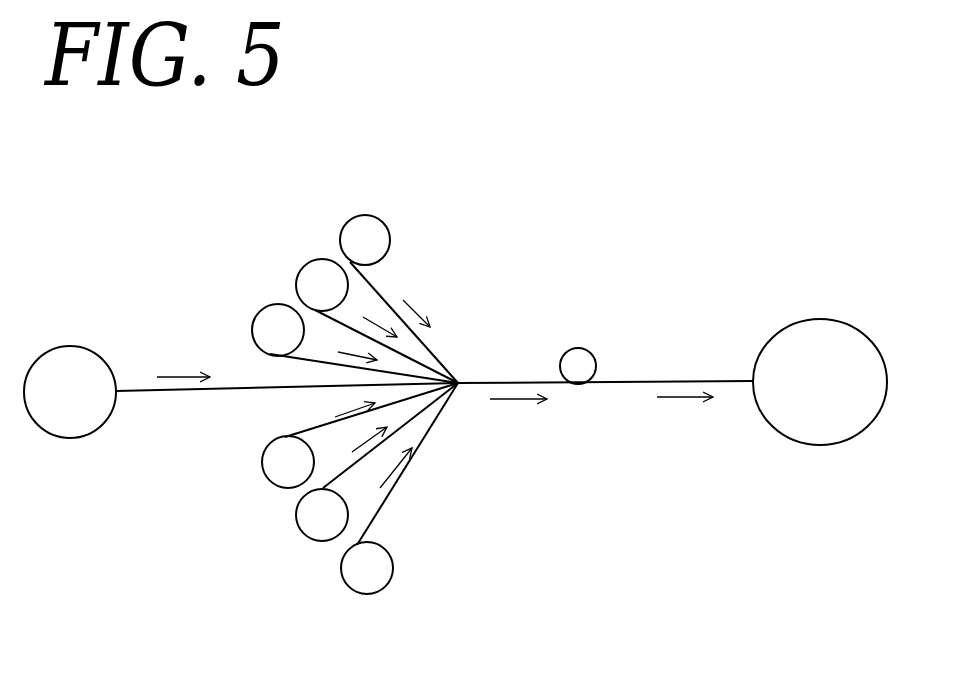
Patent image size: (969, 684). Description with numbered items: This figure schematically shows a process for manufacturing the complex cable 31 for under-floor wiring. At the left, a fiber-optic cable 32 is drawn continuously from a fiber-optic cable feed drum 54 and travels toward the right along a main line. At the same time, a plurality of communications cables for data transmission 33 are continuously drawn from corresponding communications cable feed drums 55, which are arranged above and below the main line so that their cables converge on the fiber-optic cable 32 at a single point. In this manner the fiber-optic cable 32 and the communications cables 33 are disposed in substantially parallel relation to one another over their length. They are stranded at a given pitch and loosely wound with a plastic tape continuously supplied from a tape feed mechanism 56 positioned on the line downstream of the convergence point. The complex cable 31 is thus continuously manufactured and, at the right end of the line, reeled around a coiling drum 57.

The complex cable 31 is at (685, 380).
The fiber-optic cable 32 is at (162, 392).
The communications cables for data transmission 33 is at (373, 287).
The fiber-optic cable feed drum 54 is at (72, 428).
The communications cable feed drums 55 is at (365, 230).
The tape feed mechanism 56 is at (578, 355).
The coiling drum 57 is at (823, 327).